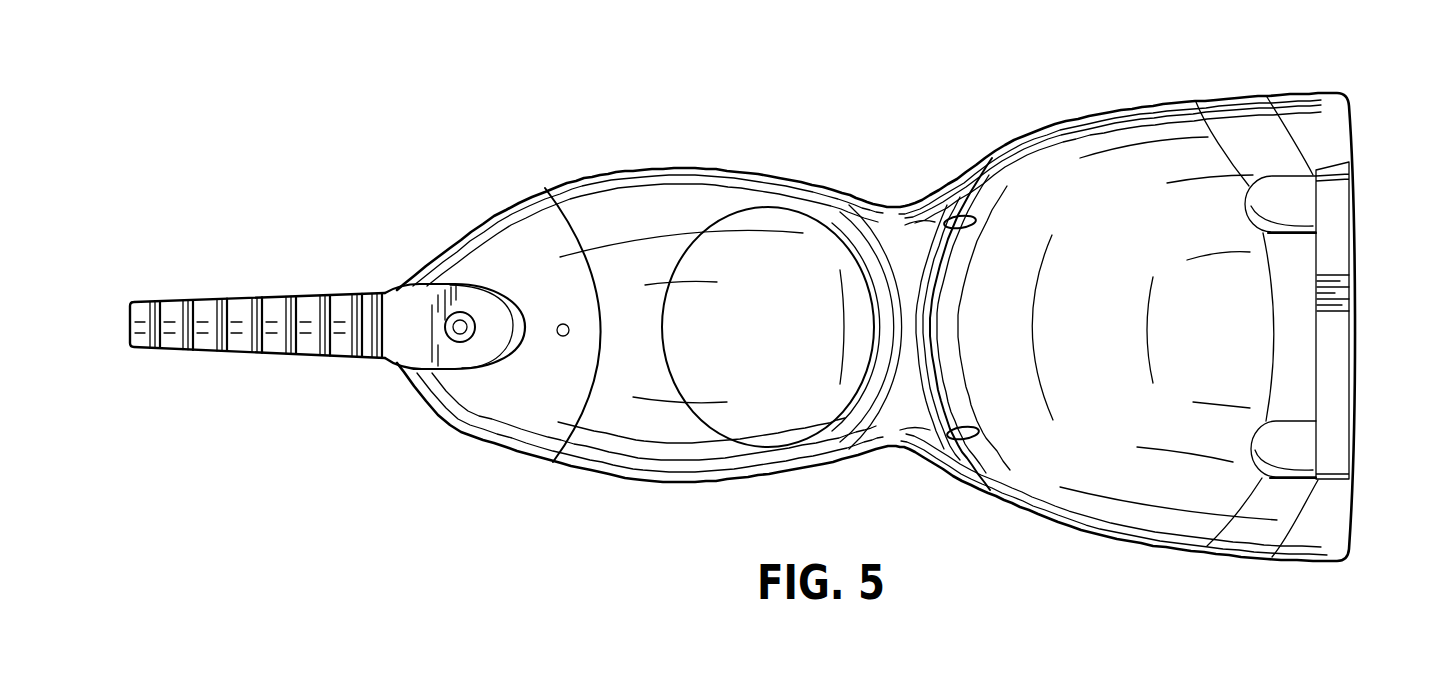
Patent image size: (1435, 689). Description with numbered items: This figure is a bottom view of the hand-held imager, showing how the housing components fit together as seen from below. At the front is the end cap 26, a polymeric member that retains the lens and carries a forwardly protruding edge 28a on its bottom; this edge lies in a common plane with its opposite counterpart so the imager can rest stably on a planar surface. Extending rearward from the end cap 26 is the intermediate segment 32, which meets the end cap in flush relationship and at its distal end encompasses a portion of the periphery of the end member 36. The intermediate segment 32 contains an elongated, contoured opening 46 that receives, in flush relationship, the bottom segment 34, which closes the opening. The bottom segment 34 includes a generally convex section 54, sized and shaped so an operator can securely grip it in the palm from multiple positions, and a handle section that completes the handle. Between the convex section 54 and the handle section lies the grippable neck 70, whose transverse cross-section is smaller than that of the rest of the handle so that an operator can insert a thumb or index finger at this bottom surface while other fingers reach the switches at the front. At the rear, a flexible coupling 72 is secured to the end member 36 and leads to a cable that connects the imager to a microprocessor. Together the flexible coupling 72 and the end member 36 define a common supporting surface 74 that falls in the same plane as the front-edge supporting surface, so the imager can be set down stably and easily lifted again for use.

The end cap 26 is at (1324, 90).
The protruding edge 28a is at (1342, 324).
The intermediate segment 32 is at (622, 186).
The bottom segment 34 is at (780, 319).
The end member 36 is at (470, 410).
The opening 46 is at (687, 392).
The convex section 54 is at (1100, 138).
The grippable neck 70 is at (893, 200).
The flexible coupling 72 is at (230, 295).
The supporting surface 74 is at (394, 293).